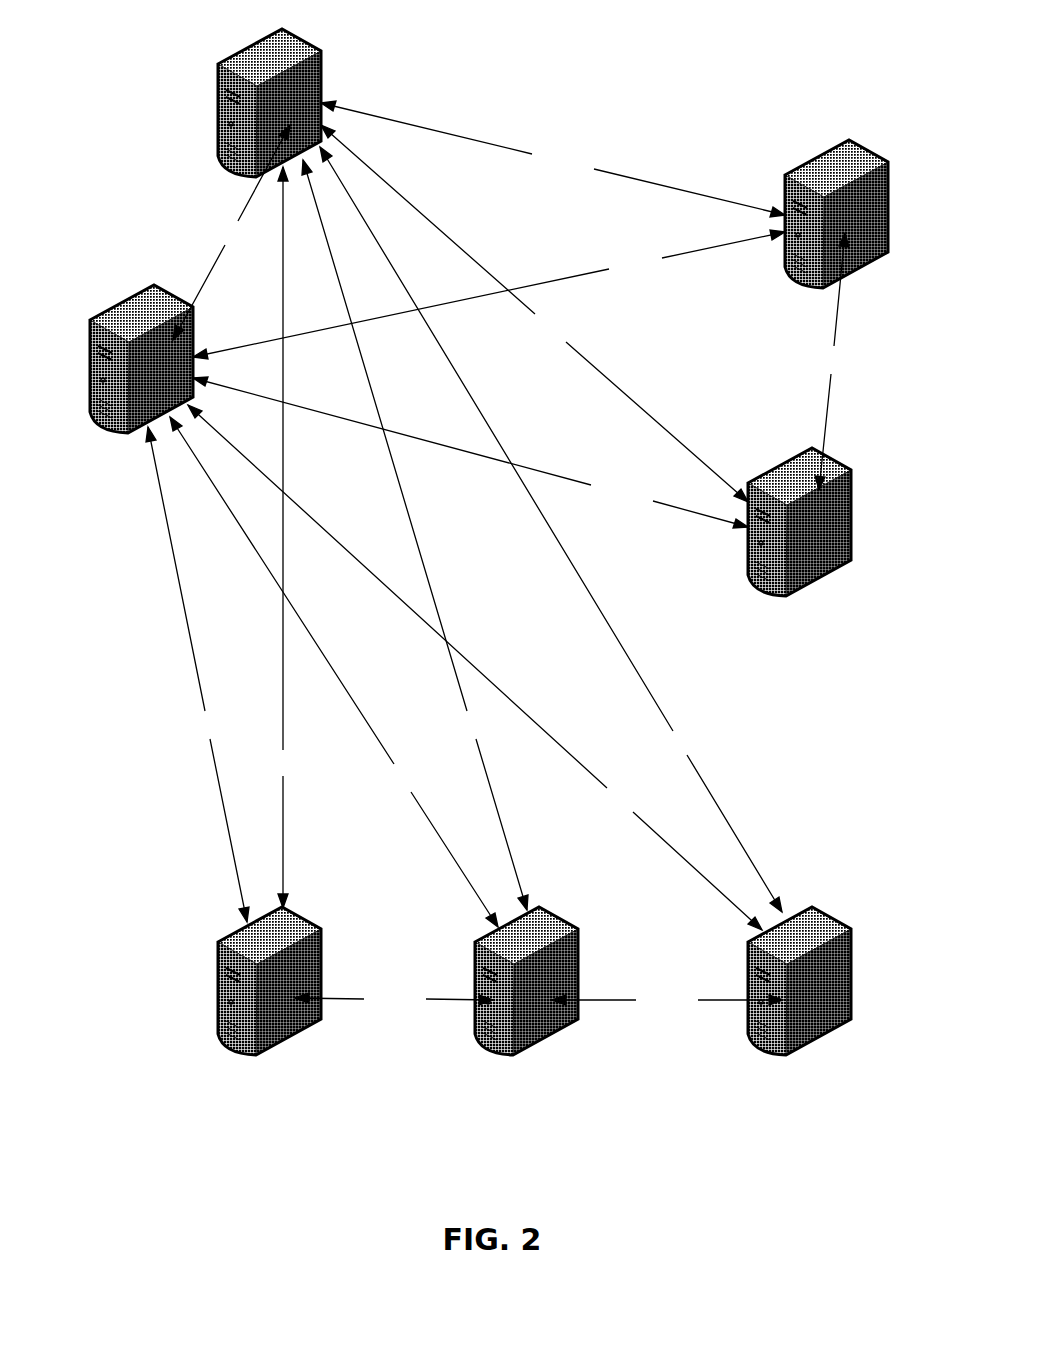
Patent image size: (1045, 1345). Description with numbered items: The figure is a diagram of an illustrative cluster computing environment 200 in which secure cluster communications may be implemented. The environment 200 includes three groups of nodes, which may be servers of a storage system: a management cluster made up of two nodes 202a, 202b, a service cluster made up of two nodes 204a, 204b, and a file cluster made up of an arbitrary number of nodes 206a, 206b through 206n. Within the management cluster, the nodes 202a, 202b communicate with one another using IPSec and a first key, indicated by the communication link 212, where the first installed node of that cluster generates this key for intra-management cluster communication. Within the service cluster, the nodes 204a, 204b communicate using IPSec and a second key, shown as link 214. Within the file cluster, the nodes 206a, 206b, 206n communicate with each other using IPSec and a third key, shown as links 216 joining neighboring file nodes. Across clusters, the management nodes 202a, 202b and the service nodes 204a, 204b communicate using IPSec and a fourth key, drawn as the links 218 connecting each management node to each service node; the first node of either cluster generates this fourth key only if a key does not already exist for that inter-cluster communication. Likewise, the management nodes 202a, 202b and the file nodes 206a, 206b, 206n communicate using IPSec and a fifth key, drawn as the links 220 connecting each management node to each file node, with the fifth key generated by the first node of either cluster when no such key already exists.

The cluster computing environment 200 is at (735, 30).
The node 202a is at (90, 333).
The node 202b is at (218, 76).
The node 204a is at (888, 192).
The node 204b is at (852, 500).
The node 206a is at (322, 940).
The node 206b is at (578, 940).
The node 206n is at (852, 940).
The Key-1 communication 212 is at (207, 278).
The Key-2 communication 214 is at (827, 432).
The Key-3 communication 216 is at (337, 1002).
The Key-4 communication 218 is at (461, 138).
The Key-5 communication 220 is at (285, 466).